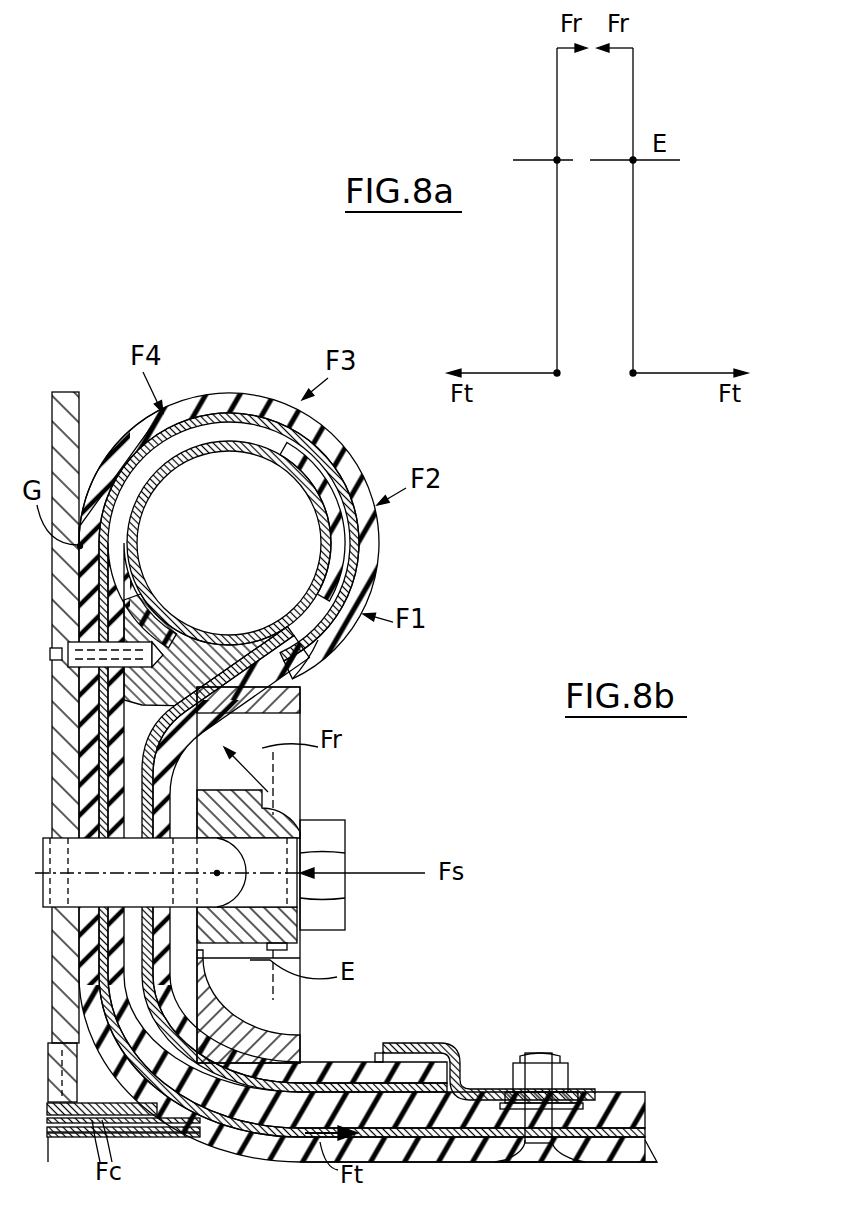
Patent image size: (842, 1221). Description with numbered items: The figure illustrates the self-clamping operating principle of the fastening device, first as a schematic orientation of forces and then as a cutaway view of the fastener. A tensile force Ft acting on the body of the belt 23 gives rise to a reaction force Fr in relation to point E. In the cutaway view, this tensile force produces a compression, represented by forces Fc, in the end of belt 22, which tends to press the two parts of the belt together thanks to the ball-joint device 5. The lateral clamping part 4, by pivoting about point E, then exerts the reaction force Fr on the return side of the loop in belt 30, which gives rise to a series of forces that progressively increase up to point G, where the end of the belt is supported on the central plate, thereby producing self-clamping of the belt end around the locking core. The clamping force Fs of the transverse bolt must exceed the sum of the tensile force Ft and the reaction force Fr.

The lateral clamping part 4 is at (300, 700).
The ball-joint device 5 is at (300, 812).
The end of belt 22 is at (66, 712).
The body of the belt 23 is at (645, 1152).
The return side of the loop in belt 30 is at (301, 686).